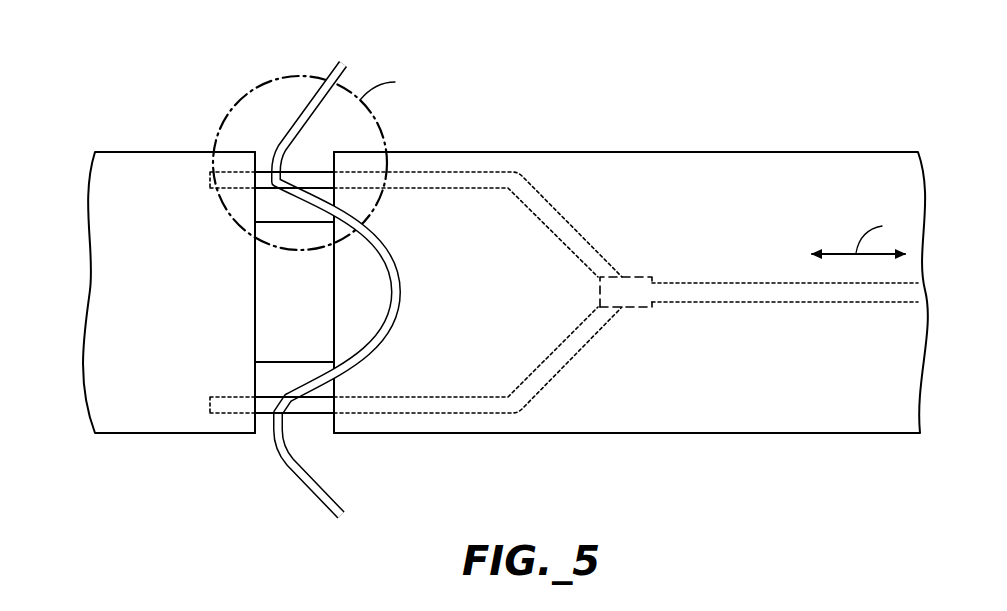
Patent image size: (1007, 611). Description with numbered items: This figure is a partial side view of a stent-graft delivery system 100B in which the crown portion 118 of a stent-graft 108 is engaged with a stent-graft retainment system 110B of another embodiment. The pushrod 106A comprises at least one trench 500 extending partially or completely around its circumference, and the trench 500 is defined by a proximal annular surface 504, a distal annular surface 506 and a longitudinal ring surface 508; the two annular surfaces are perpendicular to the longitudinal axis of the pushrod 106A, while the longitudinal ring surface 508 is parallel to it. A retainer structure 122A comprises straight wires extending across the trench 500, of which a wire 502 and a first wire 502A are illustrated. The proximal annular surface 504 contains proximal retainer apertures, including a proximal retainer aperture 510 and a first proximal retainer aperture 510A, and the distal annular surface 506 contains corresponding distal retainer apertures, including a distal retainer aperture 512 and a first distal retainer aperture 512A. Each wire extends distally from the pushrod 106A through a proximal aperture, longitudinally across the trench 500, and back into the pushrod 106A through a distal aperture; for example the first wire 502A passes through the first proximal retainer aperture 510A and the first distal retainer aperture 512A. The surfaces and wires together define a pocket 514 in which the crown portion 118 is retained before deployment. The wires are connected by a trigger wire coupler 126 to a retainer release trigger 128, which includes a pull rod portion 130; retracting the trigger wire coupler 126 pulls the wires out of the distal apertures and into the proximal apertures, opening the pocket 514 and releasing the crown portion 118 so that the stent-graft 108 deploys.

The stent-graft delivery system 100B is at (185, 55).
The pushrod 106A is at (600, 152).
The stent-graft 108 is at (275, 468).
The stent-graft retainment system 110B is at (632, 272).
The crown portion 118 is at (305, 100).
The retainer structure 122A is at (510, 190).
The trigger wire coupler 126 is at (632, 305).
The retainer release trigger 128 is at (718, 276).
The pull rod portion 130 is at (850, 300).
The trench 500 is at (270, 298).
The wire 502 is at (313, 418).
The first wire 502A is at (263, 170).
The proximal annular surface 504 is at (333, 305).
The distal annular surface 506 is at (258, 222).
The longitudinal ring surface 508 is at (262, 345).
The proximal retainer aperture 510 is at (335, 405).
The first proximal retainer aperture 510A is at (337, 170).
The distal retainer aperture 512 is at (255, 400).
The first distal retainer aperture 512A is at (255, 172).
The pocket 514 is at (270, 430).